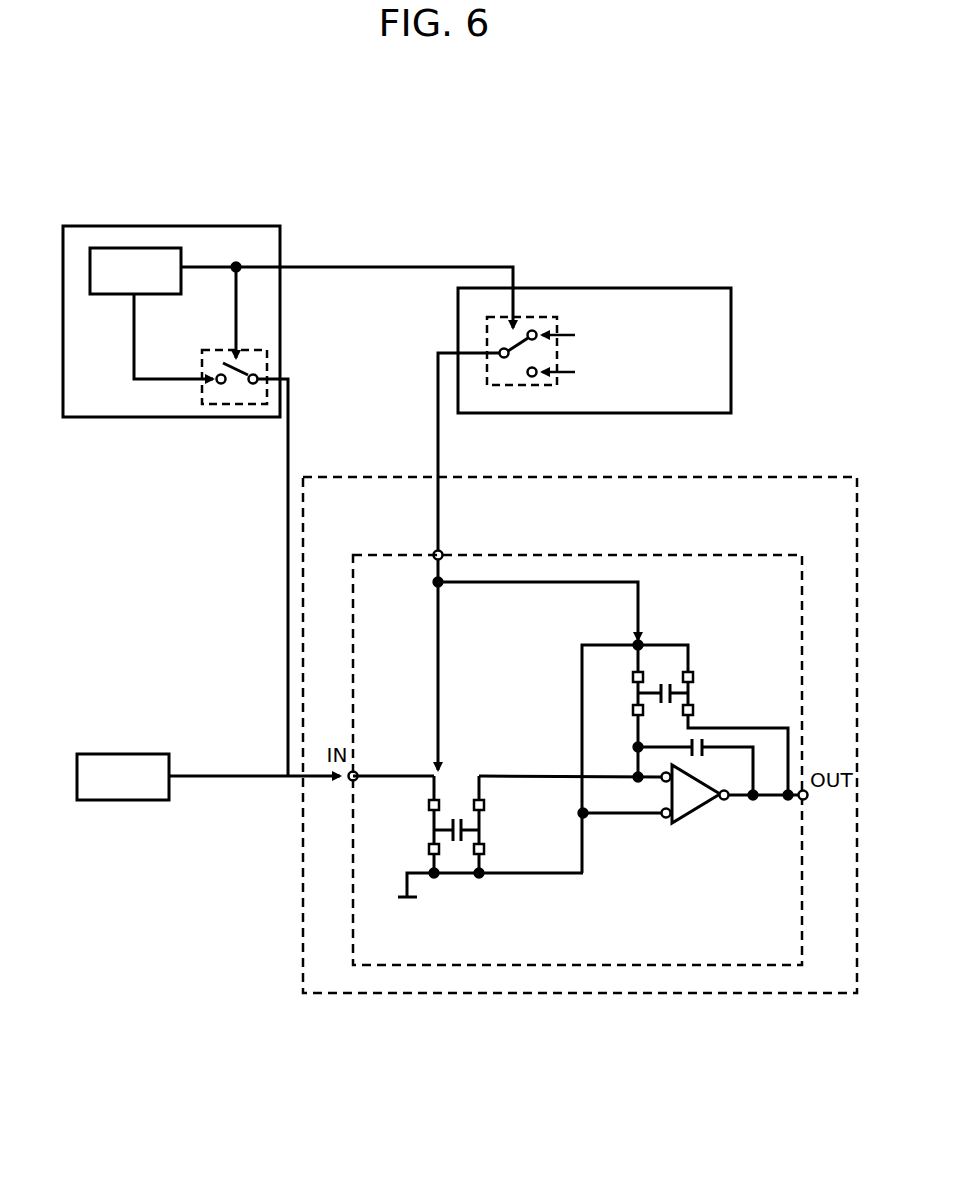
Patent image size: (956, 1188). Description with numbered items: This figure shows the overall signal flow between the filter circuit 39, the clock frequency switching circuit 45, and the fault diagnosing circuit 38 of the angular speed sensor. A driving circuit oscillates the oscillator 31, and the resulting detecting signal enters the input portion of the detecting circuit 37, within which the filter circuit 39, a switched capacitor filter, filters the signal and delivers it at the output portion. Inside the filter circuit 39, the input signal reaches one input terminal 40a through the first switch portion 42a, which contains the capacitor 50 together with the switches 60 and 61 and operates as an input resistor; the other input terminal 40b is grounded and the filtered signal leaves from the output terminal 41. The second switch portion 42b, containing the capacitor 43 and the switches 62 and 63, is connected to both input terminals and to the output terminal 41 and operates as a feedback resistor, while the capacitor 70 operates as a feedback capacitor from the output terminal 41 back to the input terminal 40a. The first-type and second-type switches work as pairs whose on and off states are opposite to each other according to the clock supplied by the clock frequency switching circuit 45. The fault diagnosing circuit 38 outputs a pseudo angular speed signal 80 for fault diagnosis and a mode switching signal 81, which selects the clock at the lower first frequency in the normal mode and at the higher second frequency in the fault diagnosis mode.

The oscillator 31 is at (132, 752).
The detecting circuit 37 is at (730, 476).
The fault diagnosing circuit 38 is at (110, 418).
The filter circuit 39 is at (737, 553).
The input terminal 40a is at (663, 782).
The input terminal 40b is at (665, 818).
The output terminal 41 is at (724, 803).
The first switch portion 42a is at (483, 835).
The second switch portion 42b is at (657, 735).
The capacitor 43 is at (714, 684).
The clock frequency switching circuit 45 is at (693, 287).
The capacitor 50 is at (502, 812).
The switches 60 is at (493, 820).
The switches 61 is at (503, 863).
The switches 62 is at (707, 690).
The switches 63 is at (717, 717).
The capacitor 70 is at (727, 777).
The pseudo angular speed signal 80 is at (150, 378).
The mode switching signal 81 is at (393, 265).